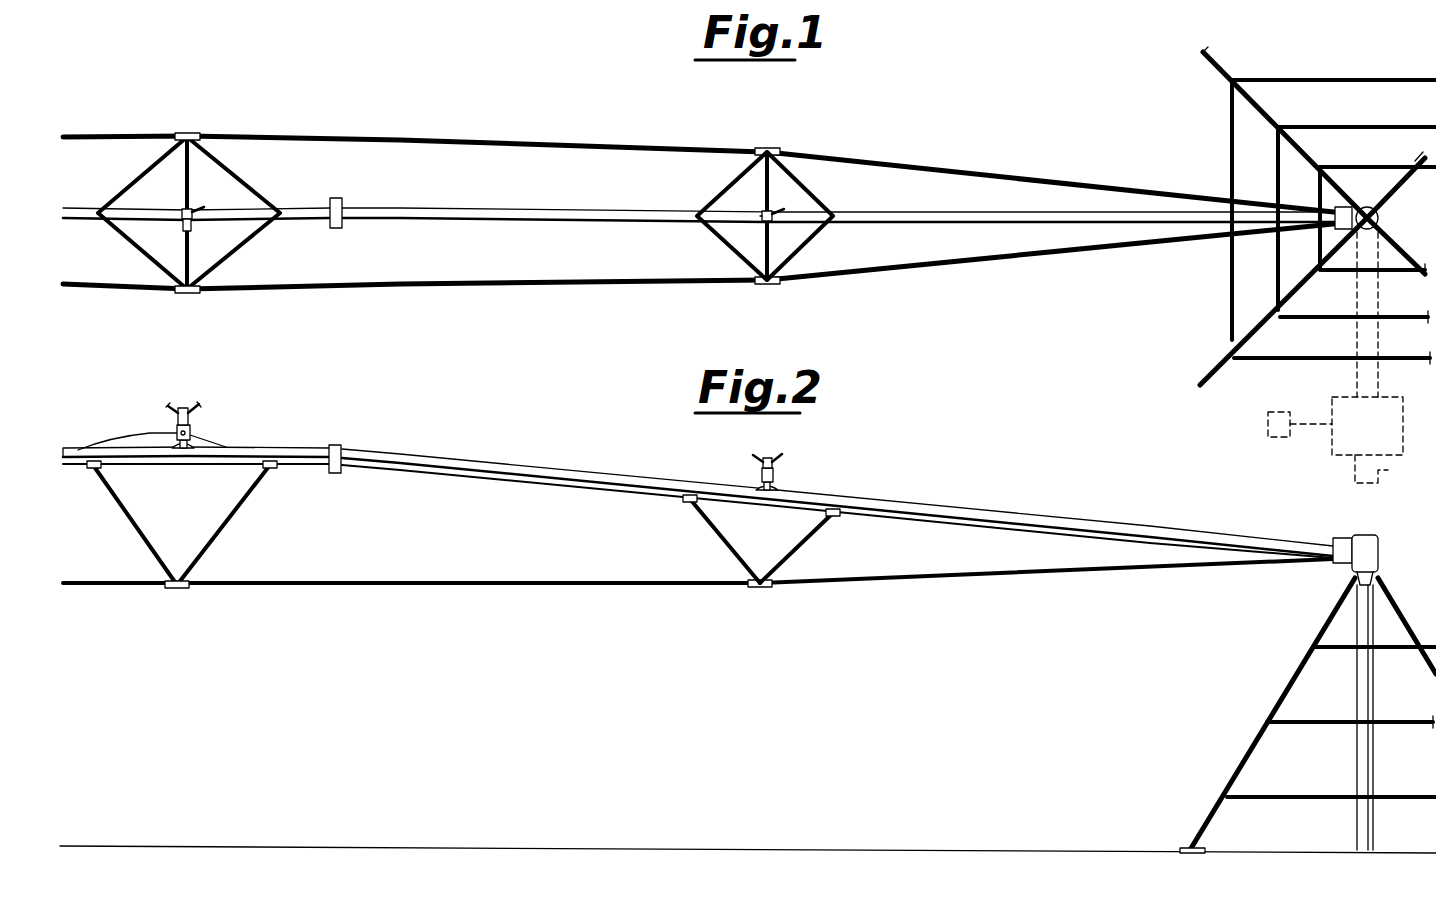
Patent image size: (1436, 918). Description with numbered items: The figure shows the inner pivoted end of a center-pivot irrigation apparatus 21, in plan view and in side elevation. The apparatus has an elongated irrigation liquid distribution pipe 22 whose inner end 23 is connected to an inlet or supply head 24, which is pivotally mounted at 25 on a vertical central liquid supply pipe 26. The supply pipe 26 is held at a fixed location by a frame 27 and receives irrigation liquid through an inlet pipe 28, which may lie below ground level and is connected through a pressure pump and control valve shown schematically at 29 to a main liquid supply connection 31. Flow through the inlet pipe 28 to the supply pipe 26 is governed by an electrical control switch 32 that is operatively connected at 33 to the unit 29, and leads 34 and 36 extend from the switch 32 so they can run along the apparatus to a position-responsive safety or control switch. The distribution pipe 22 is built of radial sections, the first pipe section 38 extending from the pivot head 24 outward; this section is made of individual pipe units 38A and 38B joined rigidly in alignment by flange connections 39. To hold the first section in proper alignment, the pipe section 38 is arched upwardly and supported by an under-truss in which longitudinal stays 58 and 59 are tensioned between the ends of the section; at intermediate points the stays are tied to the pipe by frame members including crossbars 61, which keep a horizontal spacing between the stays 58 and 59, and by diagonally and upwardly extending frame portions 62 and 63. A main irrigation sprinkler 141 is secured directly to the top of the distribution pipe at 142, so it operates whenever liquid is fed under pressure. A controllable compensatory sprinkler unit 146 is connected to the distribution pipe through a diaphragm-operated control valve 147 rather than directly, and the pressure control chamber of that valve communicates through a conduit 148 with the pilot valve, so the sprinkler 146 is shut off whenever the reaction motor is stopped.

In FIG. 1, the irrigation apparatus 21 is at (453, 89).
In FIG. 1, the irrigation liquid distribution pipe 22 is at (489, 231).
In FIG. 1, the inner end 23 is at (1343, 218).
In FIG. 2, the inner end 23 is at (1340, 539).
In FIG. 1, the supply head 24 is at (1380, 218).
In FIG. 2, the supply head 24 is at (1370, 535).
In FIG. 2, the pivotal mounting 25 is at (1380, 572).
In FIG. 2, the central liquid supply pipe 26 is at (1358, 618).
In FIG. 1, the frame 27 is at (1310, 154).
In FIG. 2, the frame 27 is at (1285, 681).
In FIG. 1, the inlet pipe 28 is at (1356, 341).
In FIG. 1, the pressure pump and control valve 29 is at (1343, 455).
In FIG. 1, the main liquid supply connection 31 is at (1388, 482).
In FIG. 1, the electrical control switch 32 is at (1285, 412).
In FIG. 1, the operative connection 33 is at (1313, 424).
In FIG. 1, the lead 34 is at (1274, 412).
In FIG. 1, the lead 36 is at (1272, 437).
In FIG. 1, the first pipe section 38 is at (396, 224).
In FIG. 2, the first pipe section 38 is at (468, 453).
In FIG. 1, the pipe unit 38A is at (440, 210).
In FIG. 2, the pipe unit 38A is at (560, 466).
In FIG. 1, the pipe unit 38B is at (138, 200).
In FIG. 2, the pipe unit 38B is at (228, 468).
In FIG. 1, the flange connection 39 is at (336, 198).
In FIG. 2, the flange connection 39 is at (333, 446).
In FIG. 1, the longitudinal stay 58 is at (548, 292).
In FIG. 2, the longitudinal stay 58 is at (430, 588).
In FIG. 1, the longitudinal stay 59 is at (543, 137).
In FIG. 2, the longitudinal stay 59 is at (837, 511).
In FIG. 1, the crossbar 61 is at (772, 240).
In FIG. 2, the crossbar 61 is at (764, 588).
In FIG. 1, the diagonal frame portion 62 is at (730, 253).
In FIG. 2, the diagonal frame portion 62 is at (712, 540).
In FIG. 1, the diagonal frame portion 63 is at (822, 236).
In FIG. 2, the diagonal frame portion 63 is at (815, 540).
In FIG. 1, the main irrigation sprinkler 141 is at (782, 198).
In FIG. 2, the main irrigation sprinkler 141 is at (780, 462).
In FIG. 2, the sprinkler mounting 142 is at (785, 485).
In FIG. 2, the controllable irrigation sprinkler unit 146 is at (192, 408).
In FIG. 2, the diaphragm-operated control valve 147 is at (195, 434).
In FIG. 1, the conduit 148 is at (178, 228).
In FIG. 2, the conduit 148 is at (150, 431).